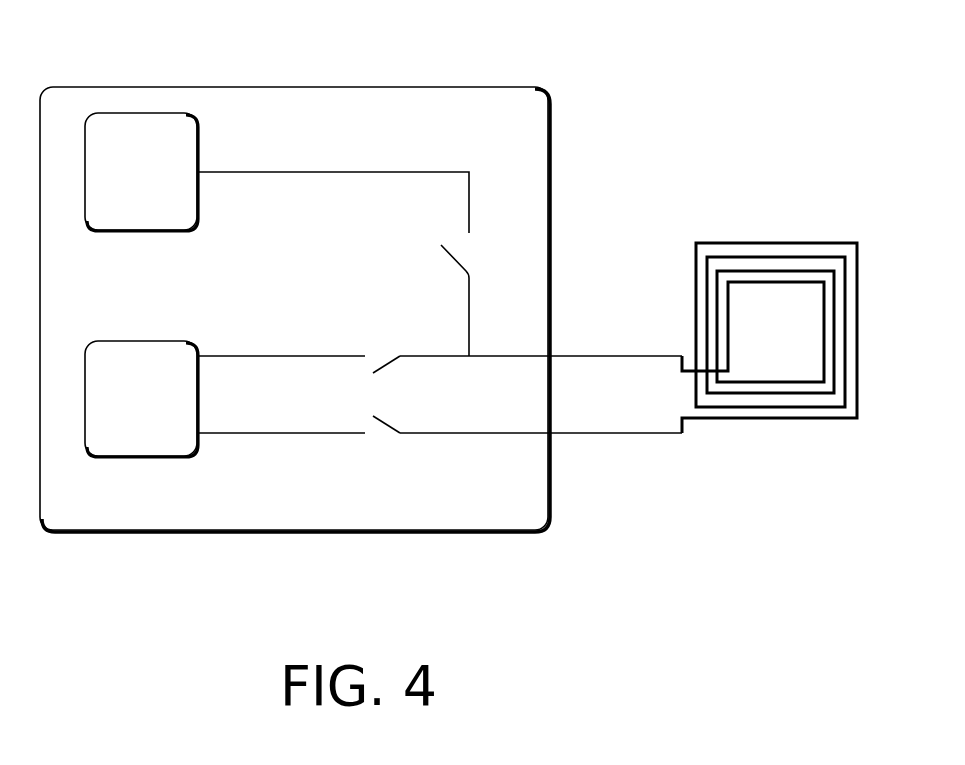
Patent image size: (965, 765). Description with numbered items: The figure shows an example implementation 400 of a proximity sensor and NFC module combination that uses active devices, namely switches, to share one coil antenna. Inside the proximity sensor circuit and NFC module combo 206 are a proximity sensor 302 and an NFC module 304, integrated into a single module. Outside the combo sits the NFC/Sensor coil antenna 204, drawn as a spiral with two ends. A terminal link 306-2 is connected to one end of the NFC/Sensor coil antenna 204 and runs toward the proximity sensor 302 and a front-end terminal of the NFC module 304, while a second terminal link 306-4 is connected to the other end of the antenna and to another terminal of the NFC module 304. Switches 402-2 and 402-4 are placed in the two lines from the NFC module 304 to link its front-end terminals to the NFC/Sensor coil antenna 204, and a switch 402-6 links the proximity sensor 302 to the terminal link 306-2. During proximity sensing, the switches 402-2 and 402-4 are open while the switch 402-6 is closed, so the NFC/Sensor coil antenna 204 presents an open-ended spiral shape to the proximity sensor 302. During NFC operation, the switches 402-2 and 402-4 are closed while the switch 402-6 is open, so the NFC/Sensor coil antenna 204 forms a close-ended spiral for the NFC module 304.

The example implementation 400 is at (338, 71).
The proximity sensor circuit and NFC module combo 206 is at (546, 86).
The proximity sensor 302 is at (141, 172).
The NFC module 304 is at (141, 399).
The switch 402-6 is at (364, 264).
The switch 402-2 is at (299, 330).
The switch 402-4 is at (299, 458).
The terminal link 306-2 is at (571, 355).
The second terminal link 306-4 is at (569, 432).
The NFC/Sensor coil antenna 204 is at (857, 243).